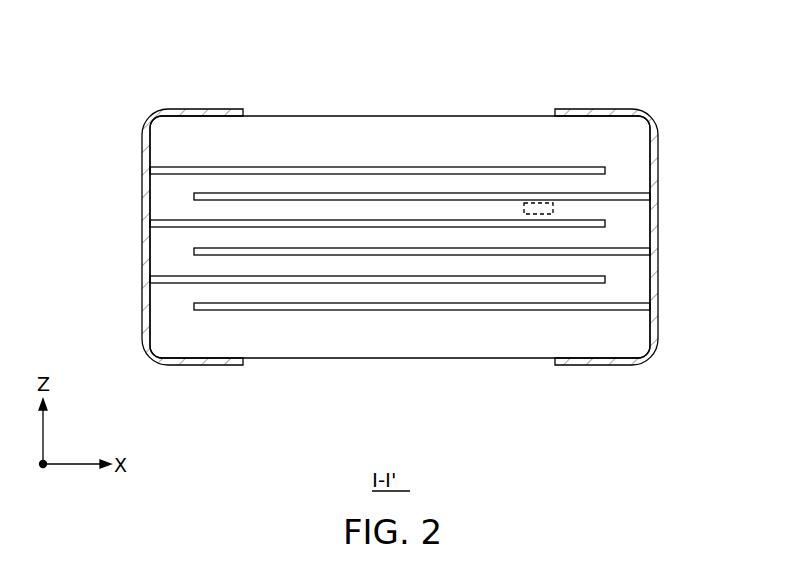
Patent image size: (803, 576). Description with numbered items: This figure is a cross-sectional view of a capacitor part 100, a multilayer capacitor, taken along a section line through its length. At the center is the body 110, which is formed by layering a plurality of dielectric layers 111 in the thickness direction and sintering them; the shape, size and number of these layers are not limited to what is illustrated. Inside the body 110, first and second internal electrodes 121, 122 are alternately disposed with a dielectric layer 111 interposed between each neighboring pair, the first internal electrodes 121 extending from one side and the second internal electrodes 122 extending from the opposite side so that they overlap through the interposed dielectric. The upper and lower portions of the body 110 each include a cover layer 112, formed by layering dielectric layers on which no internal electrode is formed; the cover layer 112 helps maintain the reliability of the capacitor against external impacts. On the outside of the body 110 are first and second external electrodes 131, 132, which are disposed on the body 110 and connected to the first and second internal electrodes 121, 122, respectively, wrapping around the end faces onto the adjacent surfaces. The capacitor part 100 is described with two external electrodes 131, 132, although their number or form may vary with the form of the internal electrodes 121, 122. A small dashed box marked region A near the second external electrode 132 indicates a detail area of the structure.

The capacitor part 100 is at (84, 38).
The body 110 is at (434, 116).
The dielectric layer 111 is at (310, 190).
The cover layer 112 is at (380, 130).
The first internal electrode 121 is at (207, 167).
The second internal electrode 122 is at (625, 193).
The first external electrode 131 is at (142, 243).
The second external electrode 132 is at (657, 178).
The region A is at (553, 205).